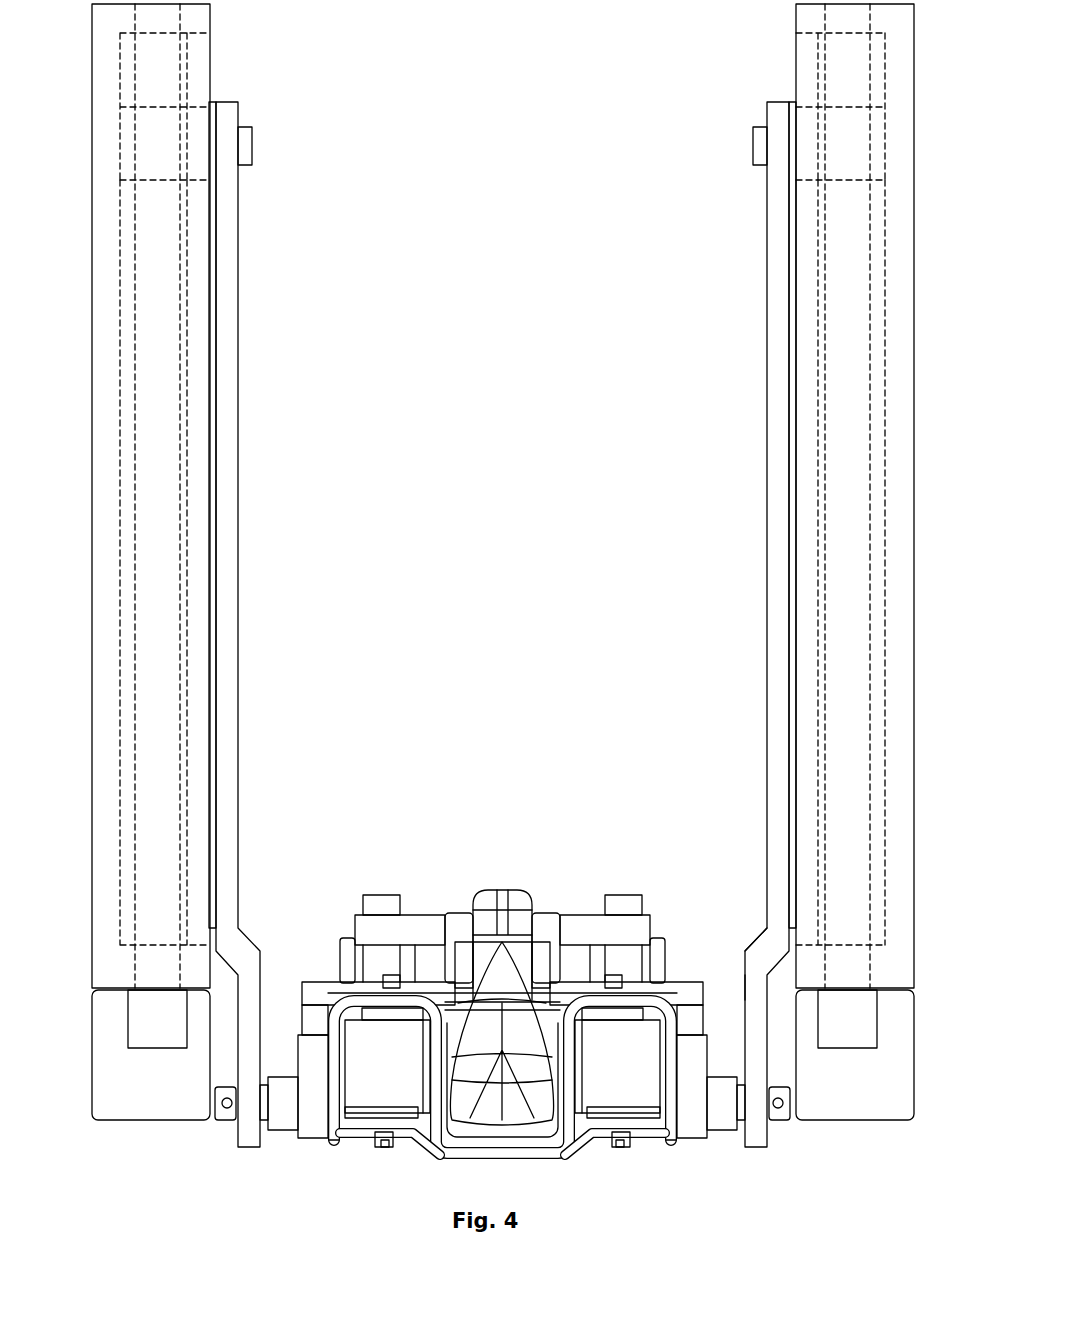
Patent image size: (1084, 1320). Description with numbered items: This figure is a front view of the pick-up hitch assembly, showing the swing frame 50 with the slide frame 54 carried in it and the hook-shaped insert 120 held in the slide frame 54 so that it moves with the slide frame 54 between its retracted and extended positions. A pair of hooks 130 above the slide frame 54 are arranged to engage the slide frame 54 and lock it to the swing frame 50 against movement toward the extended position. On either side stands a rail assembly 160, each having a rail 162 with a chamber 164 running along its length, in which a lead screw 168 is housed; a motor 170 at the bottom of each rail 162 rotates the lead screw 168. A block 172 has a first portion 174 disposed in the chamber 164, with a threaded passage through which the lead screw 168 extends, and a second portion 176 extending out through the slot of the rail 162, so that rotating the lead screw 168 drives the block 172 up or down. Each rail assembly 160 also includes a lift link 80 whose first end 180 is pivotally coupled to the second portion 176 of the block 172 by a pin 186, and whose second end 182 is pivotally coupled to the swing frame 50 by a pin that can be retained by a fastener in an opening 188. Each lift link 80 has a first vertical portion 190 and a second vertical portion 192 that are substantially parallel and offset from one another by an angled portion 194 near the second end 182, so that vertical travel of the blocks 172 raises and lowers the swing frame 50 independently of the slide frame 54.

The swing frame 50 is at (322, 982).
The slide frame 54 is at (375, 1075).
The lift link 80 is at (240, 495).
The insert 120 is at (520, 890).
The hook 130 is at (392, 895).
The rail assembly 160 is at (72, 232).
The rail 162 is at (913, 495).
The chamber 164 is at (135, 460).
The lead screw 168 is at (860, 655).
The motor 170 is at (840, 1122).
The block 172 is at (850, 150).
The first portion 174 is at (138, 130).
The second portion 176 is at (225, 103).
The first end 180 is at (790, 103).
The second end 182 is at (240, 1137).
The pin 186 is at (753, 147).
The opening 188 is at (778, 1112).
The first vertical portion 190 is at (765, 495).
The second vertical portion 192 is at (742, 985).
The angled portion 194 is at (752, 940).